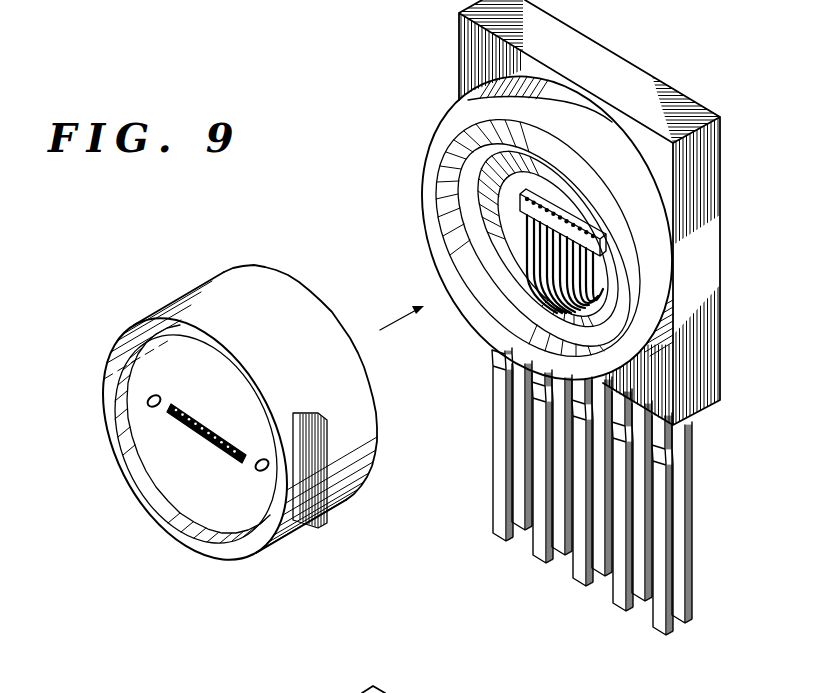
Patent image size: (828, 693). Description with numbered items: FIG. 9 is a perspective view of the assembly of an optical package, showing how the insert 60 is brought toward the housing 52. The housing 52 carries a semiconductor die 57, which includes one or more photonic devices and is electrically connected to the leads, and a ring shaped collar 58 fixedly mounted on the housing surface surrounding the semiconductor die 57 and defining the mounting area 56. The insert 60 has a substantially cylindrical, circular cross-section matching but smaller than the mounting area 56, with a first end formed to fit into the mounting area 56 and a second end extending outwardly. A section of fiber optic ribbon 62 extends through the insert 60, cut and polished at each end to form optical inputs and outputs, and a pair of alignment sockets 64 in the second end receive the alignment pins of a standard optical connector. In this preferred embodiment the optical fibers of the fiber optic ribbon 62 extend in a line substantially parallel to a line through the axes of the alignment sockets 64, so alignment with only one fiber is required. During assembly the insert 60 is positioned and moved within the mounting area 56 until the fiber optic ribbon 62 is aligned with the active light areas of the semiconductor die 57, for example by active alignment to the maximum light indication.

The housing 52 is at (592, 53).
The mounting area 56 is at (508, 177).
The semiconductor die 57 is at (512, 217).
The ring shaped collar 58 is at (441, 130).
The insert 60 is at (308, 318).
The fiber optic ribbon 62 is at (203, 440).
The alignment sockets 64 is at (147, 404).